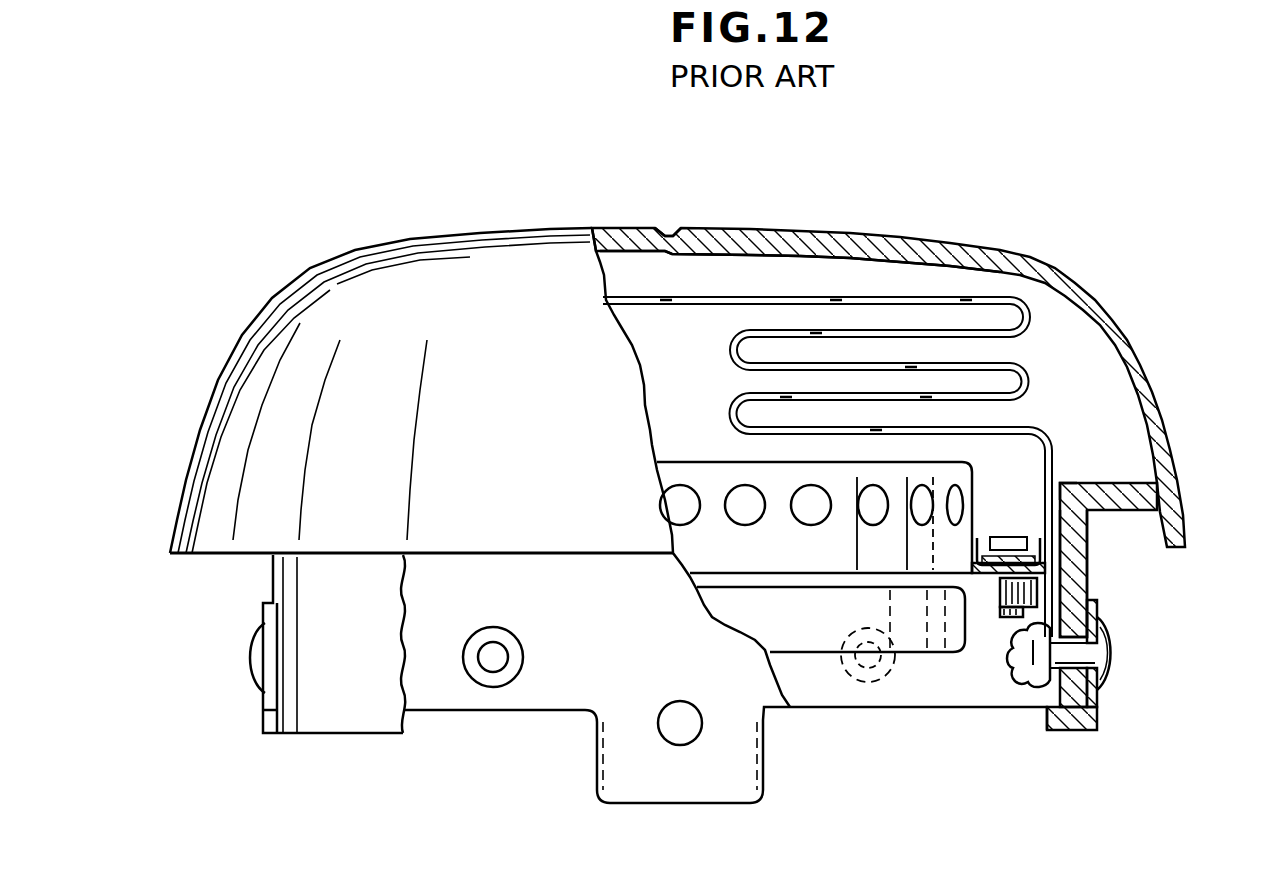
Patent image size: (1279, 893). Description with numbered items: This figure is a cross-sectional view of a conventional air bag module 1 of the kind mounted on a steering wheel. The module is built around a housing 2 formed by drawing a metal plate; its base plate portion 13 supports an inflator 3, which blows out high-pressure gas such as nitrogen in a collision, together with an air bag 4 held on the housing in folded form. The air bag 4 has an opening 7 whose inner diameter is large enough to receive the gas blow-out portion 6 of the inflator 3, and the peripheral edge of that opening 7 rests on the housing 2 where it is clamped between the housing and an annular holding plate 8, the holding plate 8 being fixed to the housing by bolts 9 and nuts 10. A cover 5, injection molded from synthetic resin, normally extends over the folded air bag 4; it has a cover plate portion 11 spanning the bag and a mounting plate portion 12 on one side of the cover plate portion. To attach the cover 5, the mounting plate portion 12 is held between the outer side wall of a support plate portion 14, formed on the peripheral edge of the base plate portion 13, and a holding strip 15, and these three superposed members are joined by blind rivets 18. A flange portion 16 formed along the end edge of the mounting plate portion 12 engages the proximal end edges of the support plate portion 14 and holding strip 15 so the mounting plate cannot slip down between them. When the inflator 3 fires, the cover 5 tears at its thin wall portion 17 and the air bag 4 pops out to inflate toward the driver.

The air bag module 1 is at (1132, 293).
The housing 2 is at (1143, 570).
The inflator 3 is at (918, 656).
The air bag 4 is at (935, 297).
The cover 5 is at (909, 343).
The gas blow-out portion 6 is at (970, 467).
The opening 7 is at (983, 562).
The annular holding plate 8 is at (1055, 485).
The bolts 9 is at (1006, 540).
The nuts 10 is at (1040, 597).
The cover plate portion 11 is at (815, 232).
The mounting plate portion 12 is at (1080, 553).
The base plate portion 13 is at (995, 607).
The support plate portion 14 is at (1047, 704).
The holding strip 15 is at (1095, 700).
The flange portion 16 is at (1075, 727).
The thin wall portion 17 is at (673, 230).
The blind rivets 18 is at (1102, 647).